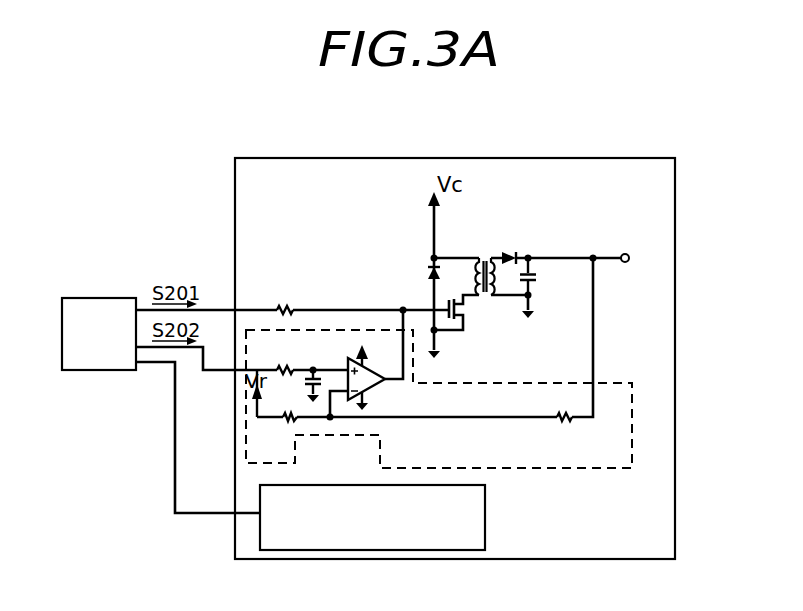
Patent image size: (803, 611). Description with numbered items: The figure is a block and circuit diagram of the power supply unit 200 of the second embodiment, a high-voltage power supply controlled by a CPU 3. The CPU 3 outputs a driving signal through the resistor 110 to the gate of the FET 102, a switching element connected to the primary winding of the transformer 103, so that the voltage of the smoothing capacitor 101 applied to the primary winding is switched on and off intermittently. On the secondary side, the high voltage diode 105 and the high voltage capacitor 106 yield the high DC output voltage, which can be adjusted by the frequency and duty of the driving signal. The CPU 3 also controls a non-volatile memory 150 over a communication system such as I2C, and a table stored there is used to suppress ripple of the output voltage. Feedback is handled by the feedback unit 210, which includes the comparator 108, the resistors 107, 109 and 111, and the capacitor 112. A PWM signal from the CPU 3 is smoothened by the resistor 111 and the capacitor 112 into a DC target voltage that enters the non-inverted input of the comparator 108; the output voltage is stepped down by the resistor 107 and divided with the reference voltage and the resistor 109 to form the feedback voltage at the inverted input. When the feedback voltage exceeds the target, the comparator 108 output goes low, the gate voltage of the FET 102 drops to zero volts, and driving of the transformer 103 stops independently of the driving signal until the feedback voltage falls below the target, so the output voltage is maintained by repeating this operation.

The CPU 3 is at (97, 298).
The power supply unit 200 is at (466, 158).
The smoothing capacitor 101 is at (430, 272).
The field effect transistor (FET) 102 is at (470, 305).
The transformer 103 is at (483, 256).
The high voltage diode 105 is at (517, 257).
The high voltage capacitor 106 is at (540, 277).
The resistor 107 is at (570, 420).
The comparator 108 is at (373, 366).
The resistor 109 is at (290, 422).
The resistor 110 is at (288, 304).
The resistor 111 is at (290, 368).
The capacitor 112 is at (308, 383).
The non-volatile memory 150 is at (330, 485).
The feedback unit 210 is at (545, 470).